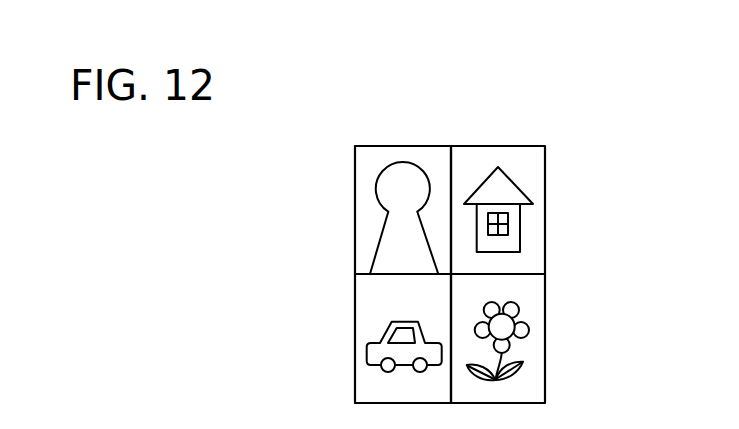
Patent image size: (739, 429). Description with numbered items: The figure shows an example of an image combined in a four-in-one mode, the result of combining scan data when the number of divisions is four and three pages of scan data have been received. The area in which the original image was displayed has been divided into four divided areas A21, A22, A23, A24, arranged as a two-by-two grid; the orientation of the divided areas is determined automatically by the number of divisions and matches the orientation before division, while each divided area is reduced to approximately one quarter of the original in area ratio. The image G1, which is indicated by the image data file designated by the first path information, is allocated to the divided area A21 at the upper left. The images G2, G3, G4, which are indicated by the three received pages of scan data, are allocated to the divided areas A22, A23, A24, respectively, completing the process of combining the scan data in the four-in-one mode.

The divided area A21 is at (368, 168).
The divided area A22 is at (532, 168).
The divided area A23 is at (368, 301).
The divided area A24 is at (532, 303).
The image G1 is at (354, 213).
The image G2 is at (549, 213).
The image G3 is at (354, 351).
The image G4 is at (549, 352).